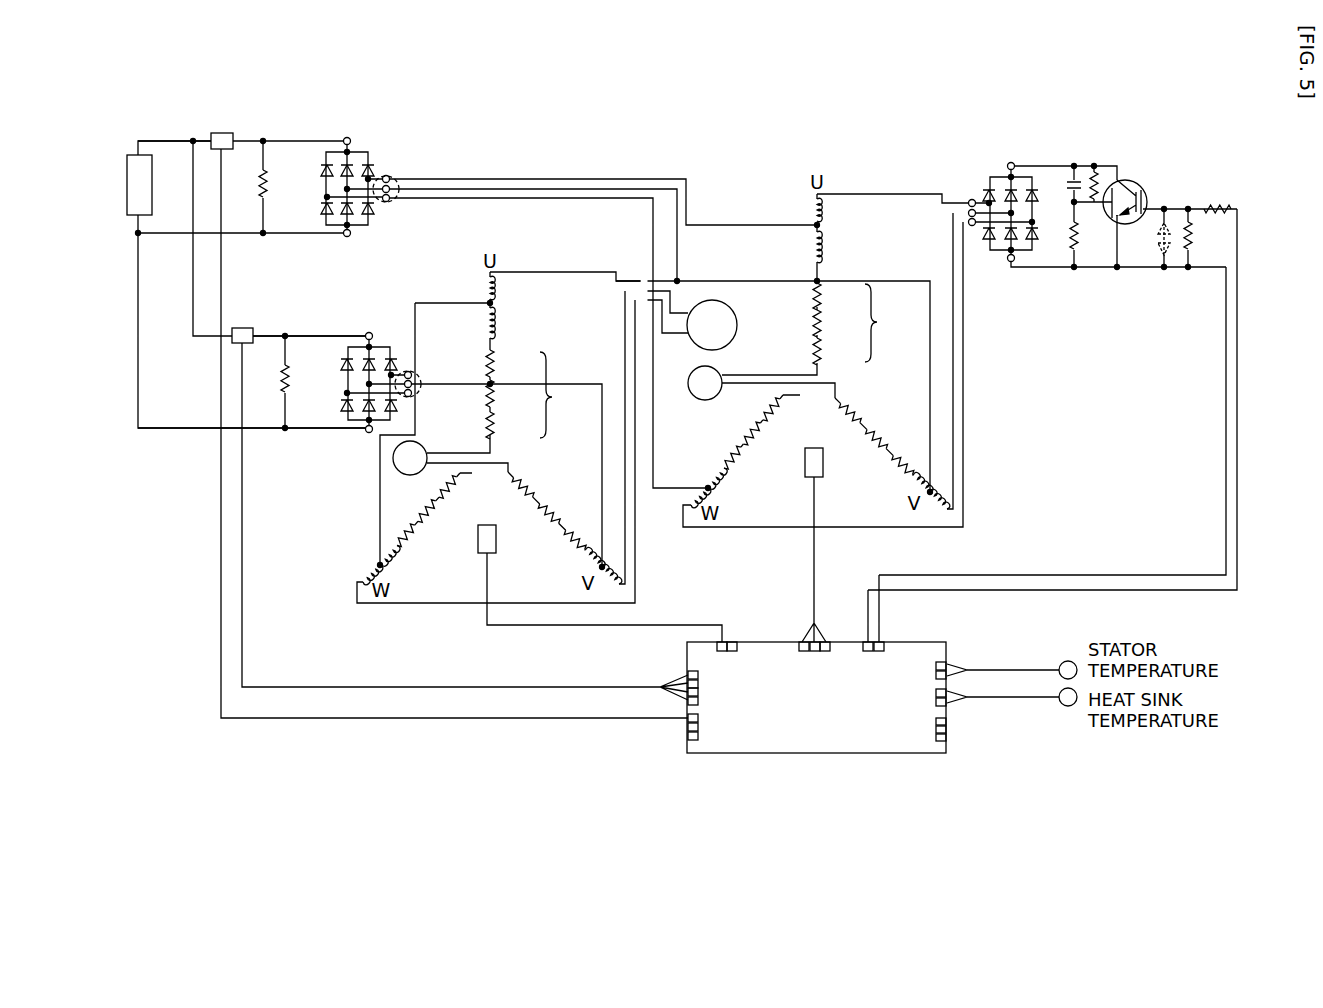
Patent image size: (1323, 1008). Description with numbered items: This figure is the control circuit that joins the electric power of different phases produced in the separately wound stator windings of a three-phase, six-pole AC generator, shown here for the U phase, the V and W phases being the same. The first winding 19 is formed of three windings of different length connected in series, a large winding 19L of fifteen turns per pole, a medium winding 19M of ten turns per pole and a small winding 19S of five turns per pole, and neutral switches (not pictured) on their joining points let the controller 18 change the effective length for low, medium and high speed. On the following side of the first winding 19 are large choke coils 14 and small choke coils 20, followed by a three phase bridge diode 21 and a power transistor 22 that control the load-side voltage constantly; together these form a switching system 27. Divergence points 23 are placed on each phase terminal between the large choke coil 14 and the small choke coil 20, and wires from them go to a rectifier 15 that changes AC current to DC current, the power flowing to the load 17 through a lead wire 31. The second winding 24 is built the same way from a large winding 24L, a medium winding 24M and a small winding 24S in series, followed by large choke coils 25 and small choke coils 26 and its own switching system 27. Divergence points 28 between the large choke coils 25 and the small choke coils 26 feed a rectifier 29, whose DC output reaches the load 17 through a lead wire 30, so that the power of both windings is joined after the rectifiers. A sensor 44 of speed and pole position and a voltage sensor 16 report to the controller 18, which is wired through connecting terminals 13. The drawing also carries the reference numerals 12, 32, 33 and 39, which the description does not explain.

The diode 12 is at (376, 170).
The terminal for connecting 13 is at (733, 642).
The large choke coil 14 is at (812, 256).
The rectifier 15 is at (352, 152).
The voltage sensor 16 is at (232, 226).
The load 17 is at (127, 172).
The controller 18 is at (816, 697).
The first winding 19 is at (755, 410).
The large winding of first winding 19L is at (823, 380).
The medium winding of first winding 19M is at (825, 384).
The small winding of first winding 19S is at (821, 385).
The small choke coil 20 is at (925, 538).
The three phase bridge diode 21 is at (989, 177).
The power transistor 22 is at (1145, 185).
The divergence point 23 is at (820, 225).
The second winding 24 is at (430, 487).
The large winding of second winding 24L is at (496, 453).
The medium winding of second winding 24M is at (498, 458).
The small winding of second winding 24S is at (496, 461).
The large choke coil 25 is at (438, 578).
The small choke coil 26 is at (496, 288).
The switching system 27 is at (737, 318).
The divergence point 28 is at (492, 303).
The rectifier 29 is at (390, 346).
The lead wire 30 is at (313, 336).
The lead wire 31 is at (302, 141).
The terminal 32 is at (390, 362).
The terminal 33 is at (398, 201).
The sensor 39 is at (404, 470).
The speed and pole position sensor 44 is at (496, 539).